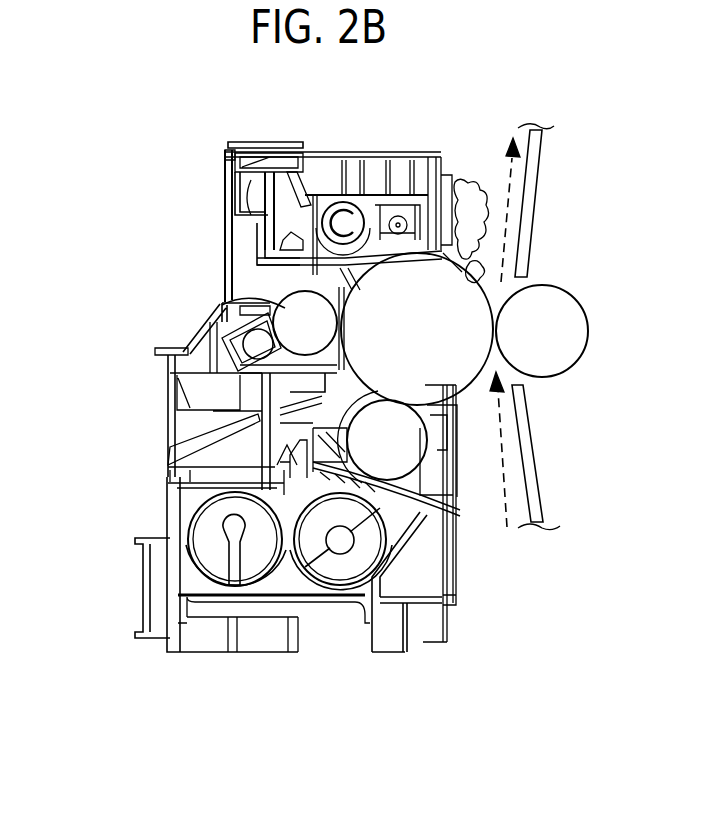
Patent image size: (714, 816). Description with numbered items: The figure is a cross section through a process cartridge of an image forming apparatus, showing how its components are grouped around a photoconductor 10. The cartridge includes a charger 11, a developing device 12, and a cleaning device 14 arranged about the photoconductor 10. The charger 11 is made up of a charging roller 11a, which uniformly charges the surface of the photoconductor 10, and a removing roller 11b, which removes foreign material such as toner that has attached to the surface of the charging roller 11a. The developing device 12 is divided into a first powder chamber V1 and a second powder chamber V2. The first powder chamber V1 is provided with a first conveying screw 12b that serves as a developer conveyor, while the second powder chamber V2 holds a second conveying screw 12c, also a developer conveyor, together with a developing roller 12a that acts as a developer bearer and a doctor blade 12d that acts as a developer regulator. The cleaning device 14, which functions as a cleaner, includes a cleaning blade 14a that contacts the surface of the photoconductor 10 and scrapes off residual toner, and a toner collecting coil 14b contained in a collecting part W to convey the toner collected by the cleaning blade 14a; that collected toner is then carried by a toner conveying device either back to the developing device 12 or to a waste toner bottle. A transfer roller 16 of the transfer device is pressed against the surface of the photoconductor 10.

The photoconductor 10 is at (425, 339).
The charger 11 is at (92, 292).
The charging roller 11a is at (282, 314).
The removing roller 11b is at (224, 340).
The developing device 12 is at (150, 518).
The developing roller 12a is at (413, 448).
The first conveying screw 12b is at (208, 548).
The second conveying screw 12c is at (341, 572).
The doctor blade 12d is at (445, 518).
The cleaning device 14 is at (218, 148).
The cleaning blade 14a is at (257, 241).
The toner collecting coil 14b is at (345, 210).
The transfer roller 16 is at (555, 290).
The collecting part W is at (372, 206).
The first powder chamber V1 is at (195, 490).
The second powder chamber V2 is at (400, 520).